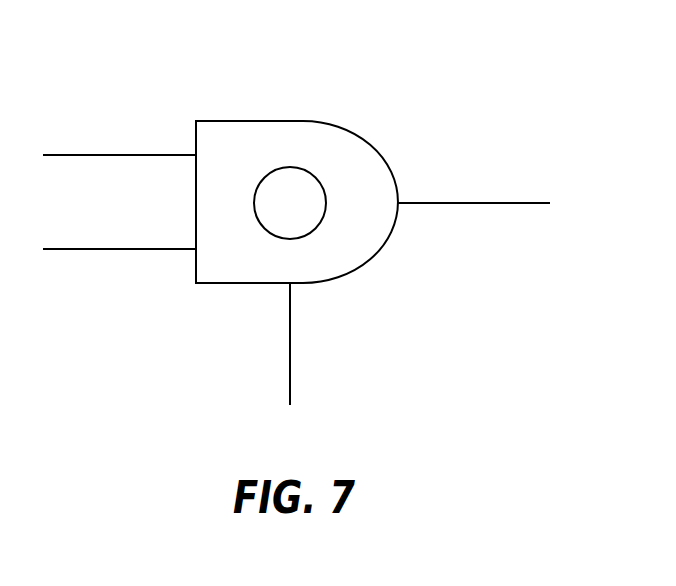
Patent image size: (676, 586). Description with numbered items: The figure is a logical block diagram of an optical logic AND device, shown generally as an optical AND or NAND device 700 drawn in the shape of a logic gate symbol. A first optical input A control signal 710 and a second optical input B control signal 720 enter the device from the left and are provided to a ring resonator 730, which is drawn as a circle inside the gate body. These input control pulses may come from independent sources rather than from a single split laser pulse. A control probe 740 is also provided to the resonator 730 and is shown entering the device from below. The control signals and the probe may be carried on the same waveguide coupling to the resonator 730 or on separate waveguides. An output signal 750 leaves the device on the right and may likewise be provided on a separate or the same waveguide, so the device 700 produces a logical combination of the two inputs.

The optical AND or NAND device 700 is at (405, 69).
The first optical input A control signal 710 is at (121, 157).
The second optical input B control signal 720 is at (121, 251).
The ring resonator 730 is at (308, 170).
The control probe 740 is at (288, 370).
The output signal 750 is at (475, 205).